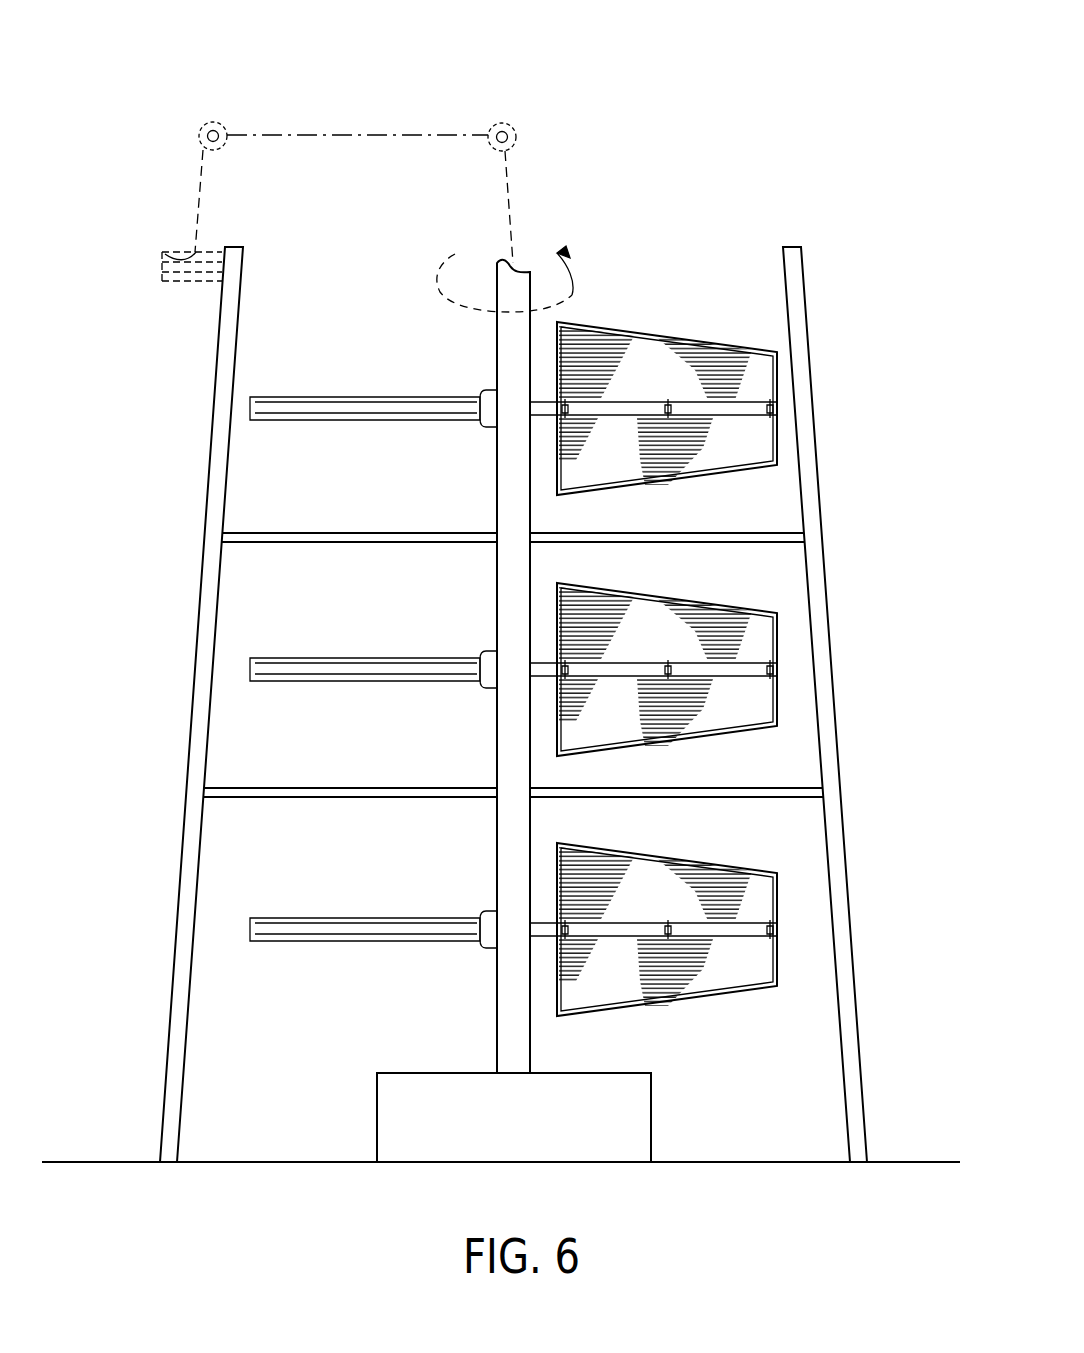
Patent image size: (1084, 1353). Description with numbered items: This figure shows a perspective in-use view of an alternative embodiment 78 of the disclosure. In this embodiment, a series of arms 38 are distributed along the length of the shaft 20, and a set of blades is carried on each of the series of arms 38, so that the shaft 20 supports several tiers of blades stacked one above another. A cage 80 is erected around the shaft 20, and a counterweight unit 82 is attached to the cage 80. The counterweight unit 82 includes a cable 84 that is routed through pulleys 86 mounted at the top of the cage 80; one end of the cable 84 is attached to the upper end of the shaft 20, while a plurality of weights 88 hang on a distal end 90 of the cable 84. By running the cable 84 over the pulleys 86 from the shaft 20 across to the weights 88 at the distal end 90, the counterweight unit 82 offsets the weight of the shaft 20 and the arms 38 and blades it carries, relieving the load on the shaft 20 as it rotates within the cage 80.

The shaft 20 is at (533, 313).
The arms 38 is at (752, 404).
The alternative embodiment 78 is at (853, 230).
The cage 80 is at (212, 450).
The counterweight unit 82 is at (213, 112).
The cable 84 is at (376, 140).
The pulleys 86 is at (199, 137).
The weights 88 is at (161, 264).
The distal end 90 is at (190, 256).